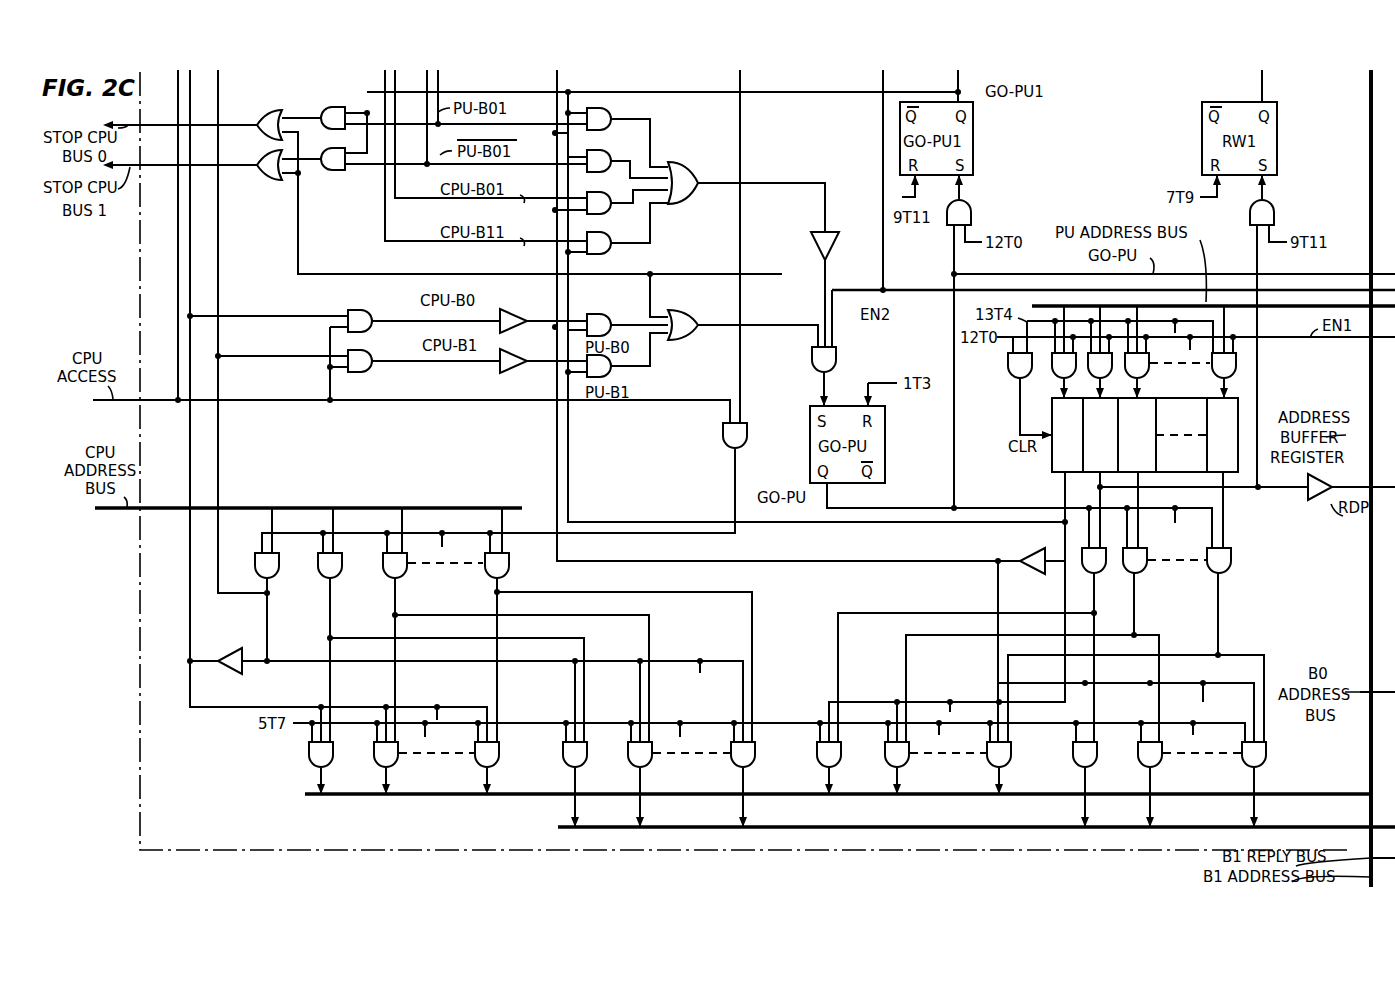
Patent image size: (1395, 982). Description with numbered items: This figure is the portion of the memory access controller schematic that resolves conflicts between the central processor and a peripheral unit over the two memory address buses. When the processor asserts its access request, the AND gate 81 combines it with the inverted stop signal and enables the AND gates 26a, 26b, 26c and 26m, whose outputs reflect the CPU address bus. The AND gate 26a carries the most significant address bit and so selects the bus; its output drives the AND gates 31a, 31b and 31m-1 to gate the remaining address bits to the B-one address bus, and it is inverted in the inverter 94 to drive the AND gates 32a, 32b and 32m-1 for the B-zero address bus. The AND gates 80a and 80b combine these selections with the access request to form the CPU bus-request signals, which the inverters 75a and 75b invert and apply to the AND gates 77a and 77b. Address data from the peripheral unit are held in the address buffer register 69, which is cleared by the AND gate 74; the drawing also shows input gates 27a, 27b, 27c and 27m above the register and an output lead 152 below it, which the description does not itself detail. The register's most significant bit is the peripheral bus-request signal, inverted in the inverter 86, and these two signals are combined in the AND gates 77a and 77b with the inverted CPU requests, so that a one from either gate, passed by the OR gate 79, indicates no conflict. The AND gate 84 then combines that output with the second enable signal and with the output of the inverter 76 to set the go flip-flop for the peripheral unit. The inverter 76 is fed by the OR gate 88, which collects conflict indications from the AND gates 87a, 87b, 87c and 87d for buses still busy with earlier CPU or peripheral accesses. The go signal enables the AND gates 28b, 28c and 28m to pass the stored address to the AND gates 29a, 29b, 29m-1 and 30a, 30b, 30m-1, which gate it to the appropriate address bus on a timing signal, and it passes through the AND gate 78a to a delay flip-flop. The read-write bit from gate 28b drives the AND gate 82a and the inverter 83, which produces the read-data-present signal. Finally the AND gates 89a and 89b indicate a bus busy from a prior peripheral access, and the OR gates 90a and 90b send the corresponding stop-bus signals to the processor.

The AND gate 26a is at (278, 570).
The AND gate 26b is at (340, 568).
The AND gate 26c is at (406, 570).
The AND gate 26m is at (508, 568).
The AND gate 27a is at (1052, 377).
The AND gate 27b is at (1088, 377).
The AND gate 27c is at (1147, 377).
The AND gate 27m is at (1235, 375).
The AND gate 28b is at (1104, 572).
The AND gate 28c is at (1144, 572).
The AND gate 28m is at (1228, 572).
The AND gate 29a is at (1096, 761).
The AND gate 29b is at (1161, 761).
The AND gate 29m-1 is at (1265, 761).
The AND gate 30a is at (840, 761).
The AND gate 30b is at (908, 761).
The AND gate 30m-1 is at (1010, 761).
The AND gate 31a is at (586, 761).
The AND gate 31b is at (651, 761).
The AND gate 31m-1 is at (754, 761).
The AND gate 32a is at (332, 761).
The AND gate 32b is at (397, 761).
The AND gate 32m-1 is at (498, 761).
The address buffer register 69 is at (1052, 458).
The AND gate 74 is at (1008, 374).
The inverter 75a is at (526, 358).
The inverter 75b is at (524, 312).
The inverter 76 is at (840, 247).
The AND gate 77a is at (612, 375).
The AND gate 77b is at (596, 314).
The AND gate 78a is at (972, 210).
The OR gate 79 is at (686, 314).
The AND gate 80a is at (365, 373).
The AND gate 80b is at (362, 310).
The AND gate 81 is at (723, 440).
The AND gate 82a is at (1275, 210).
The inverter 83 is at (1322, 500).
The AND gate 84 is at (838, 362).
The inverter 86 is at (1028, 574).
The AND gate 87a is at (603, 256).
The AND gate 87b is at (603, 216).
The AND gate 87c is at (612, 152).
The AND gate 87d is at (614, 115).
The OR gate 88 is at (690, 170).
The AND gate 89a is at (333, 172).
The AND gate 89b is at (335, 107).
The OR gate 90a is at (262, 182).
The OR gate 90b is at (270, 114).
The inverter 94 is at (237, 647).
The register output line 152 is at (1064, 487).